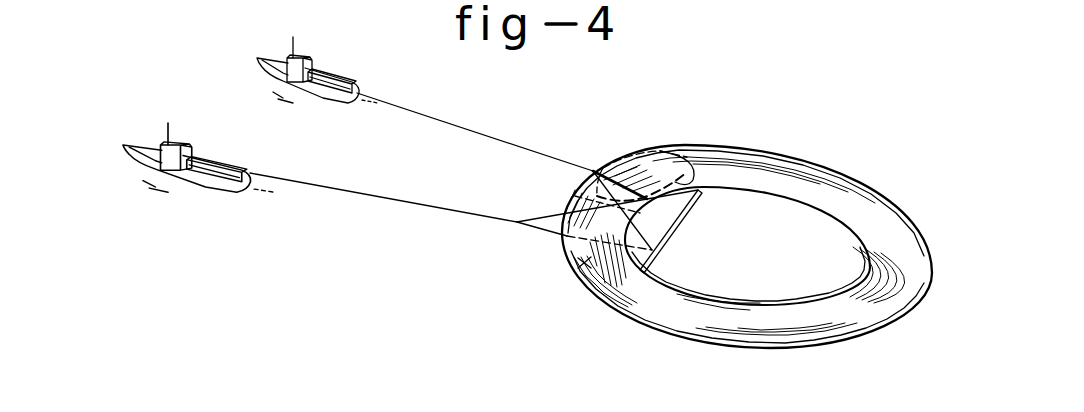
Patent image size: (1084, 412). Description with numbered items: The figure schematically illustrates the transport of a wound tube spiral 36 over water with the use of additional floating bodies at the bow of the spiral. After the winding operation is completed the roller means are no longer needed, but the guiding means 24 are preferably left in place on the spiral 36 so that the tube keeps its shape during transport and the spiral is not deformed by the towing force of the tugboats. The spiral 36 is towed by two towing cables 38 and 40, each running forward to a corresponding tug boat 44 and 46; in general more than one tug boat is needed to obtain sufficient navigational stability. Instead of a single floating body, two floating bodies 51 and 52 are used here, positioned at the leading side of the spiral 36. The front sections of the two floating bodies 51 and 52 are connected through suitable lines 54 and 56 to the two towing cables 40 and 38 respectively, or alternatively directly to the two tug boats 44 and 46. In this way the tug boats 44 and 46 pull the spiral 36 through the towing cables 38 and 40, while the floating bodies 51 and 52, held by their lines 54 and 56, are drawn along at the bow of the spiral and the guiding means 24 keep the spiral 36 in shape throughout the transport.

The guiding means 24 is at (668, 235).
The spiral 36 is at (827, 167).
The towing cable 38 is at (465, 127).
The towing cable 40 is at (388, 197).
The tug boat 44 is at (325, 98).
The tug boat 46 is at (207, 182).
The floating body 51 is at (575, 285).
The floating body 52 is at (658, 142).
The line 54 is at (538, 232).
The line 56 is at (593, 170).